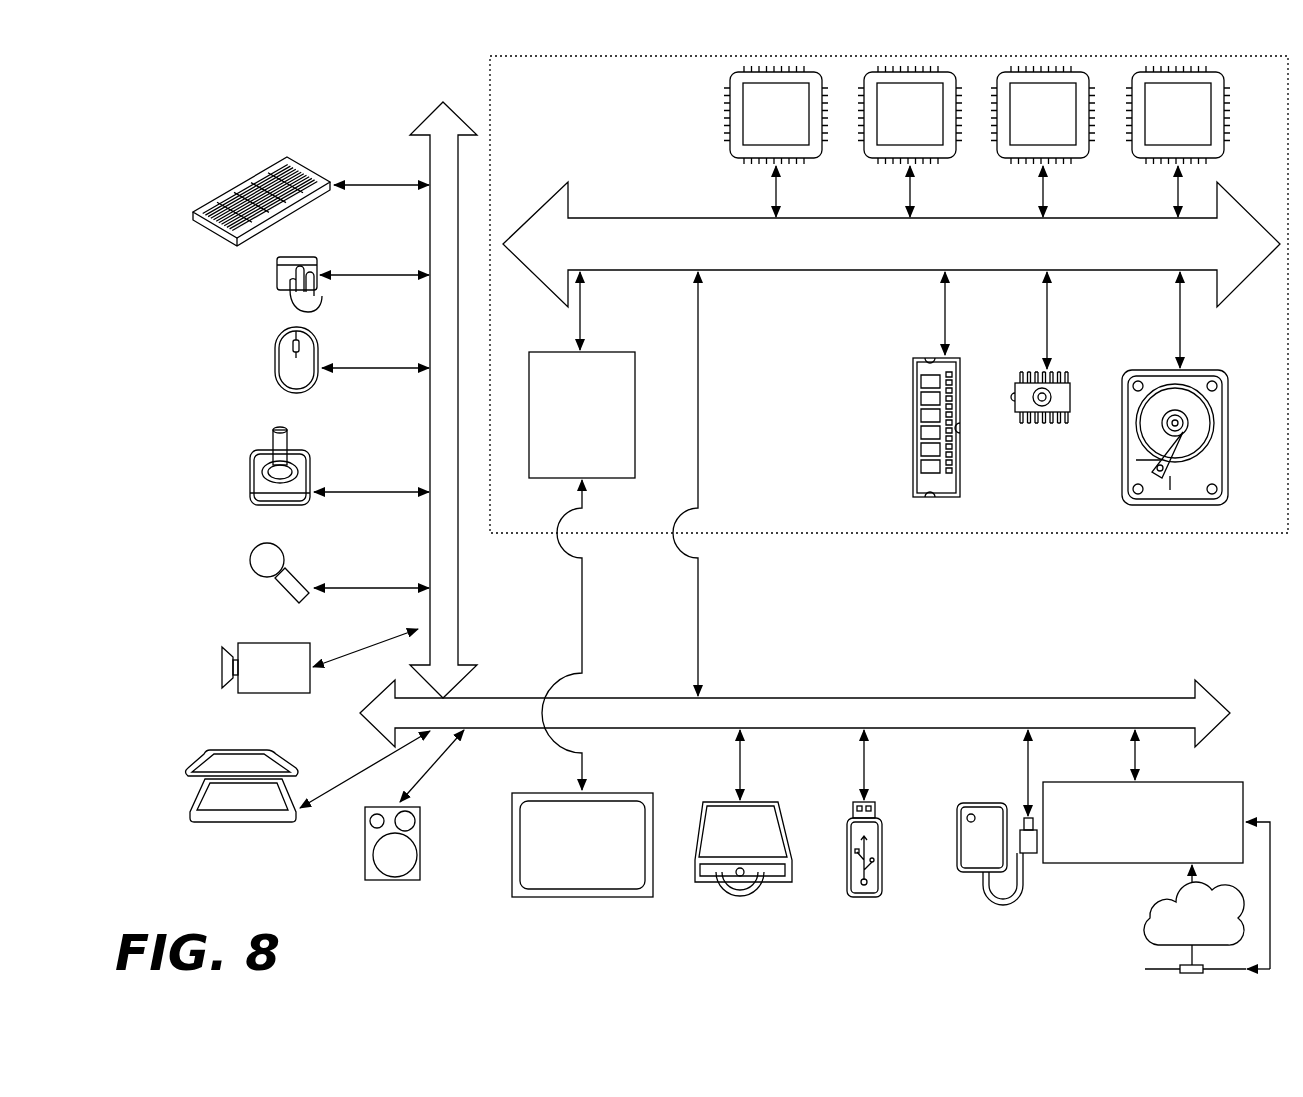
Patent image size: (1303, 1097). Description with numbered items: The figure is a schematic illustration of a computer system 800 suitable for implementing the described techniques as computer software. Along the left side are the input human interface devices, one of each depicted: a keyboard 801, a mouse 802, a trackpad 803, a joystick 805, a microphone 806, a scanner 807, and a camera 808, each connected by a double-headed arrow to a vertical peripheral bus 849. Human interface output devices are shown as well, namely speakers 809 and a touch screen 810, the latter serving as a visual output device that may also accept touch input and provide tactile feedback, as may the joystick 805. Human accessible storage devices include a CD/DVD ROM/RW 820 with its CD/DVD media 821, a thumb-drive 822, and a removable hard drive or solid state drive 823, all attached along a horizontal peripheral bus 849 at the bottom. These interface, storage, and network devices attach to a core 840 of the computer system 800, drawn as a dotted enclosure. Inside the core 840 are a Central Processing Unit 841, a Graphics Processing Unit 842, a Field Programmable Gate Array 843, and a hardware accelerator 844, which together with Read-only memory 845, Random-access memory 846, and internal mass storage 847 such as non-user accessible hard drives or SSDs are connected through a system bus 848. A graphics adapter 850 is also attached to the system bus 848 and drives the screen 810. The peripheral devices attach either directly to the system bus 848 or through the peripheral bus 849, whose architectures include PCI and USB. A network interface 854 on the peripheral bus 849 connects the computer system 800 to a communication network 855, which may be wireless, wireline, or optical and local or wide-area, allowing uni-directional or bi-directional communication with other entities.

The computer system 800 is at (240, 143).
The keyboard 801 is at (193, 212).
The mouse 802 is at (275, 360).
The trackpad 803 is at (277, 280).
The joystick 805 is at (252, 490).
The microphone 806 is at (251, 560).
The scanner 807 is at (190, 810).
The camera 808 is at (222, 668).
The speakers 809 is at (390, 880).
The touch screen 810 is at (578, 897).
The CD/DVD ROM/RW 820 is at (777, 882).
The CD/DVD media 821 is at (726, 895).
The thumb-drive 822 is at (870, 897).
The removable hard drive or solid state drive 823 is at (968, 872).
The core 840 is at (880, 536).
The Central Processing Unit 841 is at (760, 139).
The Graphics Processing Unit 842 is at (894, 139).
The Field Programmable Gate Array 843 is at (1027, 139).
The hardware accelerator 844 is at (1162, 139).
The Read-only memory 845 is at (1035, 425).
The Random-access memory 846 is at (912, 458).
The internal mass storage 847 is at (1140, 370).
The system bus 848 is at (963, 254).
The peripheral bus 849 is at (428, 145).
The graphics adapter 850 is at (567, 450).
The network interface 854 is at (1128, 848).
The network 855 is at (1147, 932).